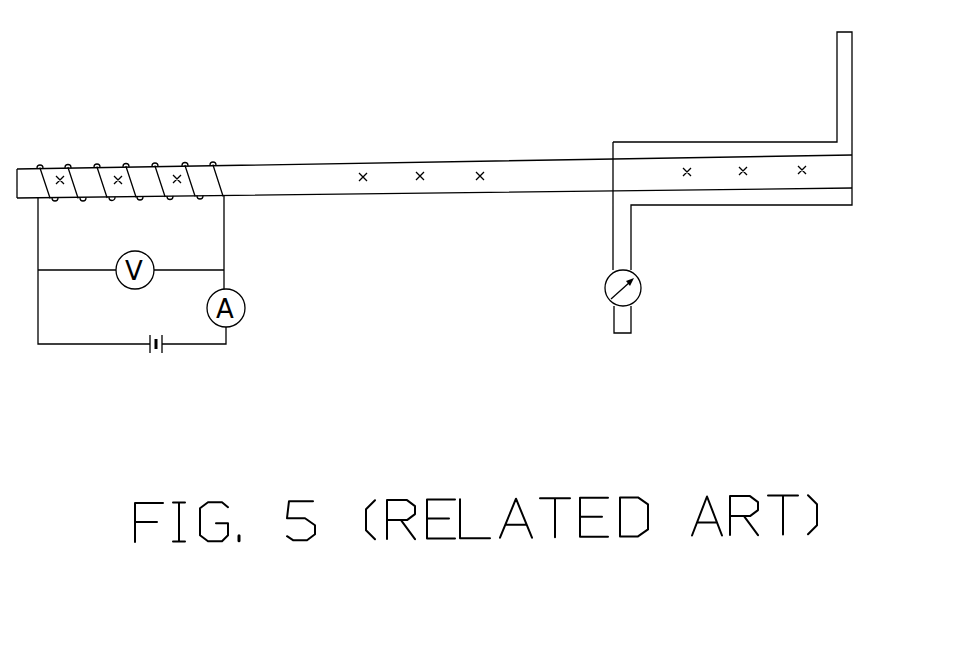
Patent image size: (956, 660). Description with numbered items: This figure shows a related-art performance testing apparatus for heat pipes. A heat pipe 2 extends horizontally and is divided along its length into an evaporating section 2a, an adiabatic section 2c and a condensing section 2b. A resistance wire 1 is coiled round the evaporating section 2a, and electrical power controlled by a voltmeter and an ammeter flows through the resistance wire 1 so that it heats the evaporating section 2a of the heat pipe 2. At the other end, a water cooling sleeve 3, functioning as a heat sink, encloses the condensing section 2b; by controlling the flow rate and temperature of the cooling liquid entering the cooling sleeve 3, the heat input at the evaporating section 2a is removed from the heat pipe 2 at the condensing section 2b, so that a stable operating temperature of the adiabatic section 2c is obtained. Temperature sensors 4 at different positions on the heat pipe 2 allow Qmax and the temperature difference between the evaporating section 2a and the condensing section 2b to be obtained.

The resistance wire 1 is at (156, 160).
The heat pipe 2 is at (268, 162).
The evaporating section 2a is at (87, 178).
The condensing section 2b is at (672, 170).
The adiabatic section 2c is at (452, 175).
The water cooling sleeve 3 is at (772, 145).
The temperature sensors 4 is at (365, 168).